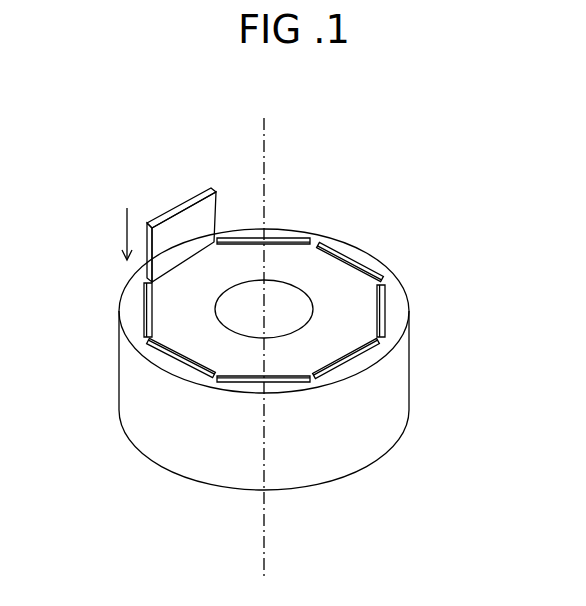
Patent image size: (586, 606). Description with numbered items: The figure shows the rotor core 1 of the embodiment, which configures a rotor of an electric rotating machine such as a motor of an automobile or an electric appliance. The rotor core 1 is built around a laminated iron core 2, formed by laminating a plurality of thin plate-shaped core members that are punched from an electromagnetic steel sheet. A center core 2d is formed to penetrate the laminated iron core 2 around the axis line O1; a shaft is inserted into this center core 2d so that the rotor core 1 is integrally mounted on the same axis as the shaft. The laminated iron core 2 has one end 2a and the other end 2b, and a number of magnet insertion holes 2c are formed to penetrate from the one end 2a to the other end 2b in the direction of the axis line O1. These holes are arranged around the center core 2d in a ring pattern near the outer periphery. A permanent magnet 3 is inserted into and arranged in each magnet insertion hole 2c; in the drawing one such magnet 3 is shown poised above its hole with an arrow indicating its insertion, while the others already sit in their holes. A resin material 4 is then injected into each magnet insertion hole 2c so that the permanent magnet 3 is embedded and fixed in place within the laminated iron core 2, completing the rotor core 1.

The rotor core 1 is at (458, 197).
The laminated iron core 2 is at (409, 357).
The one end 2a is at (363, 467).
The other end 2b is at (330, 243).
The magnet insertion hole 2c is at (193, 370).
The center core 2d is at (242, 292).
The permanent magnet 3 is at (180, 200).
The resin material 4 is at (386, 312).
The axis line O1 is at (261, 336).